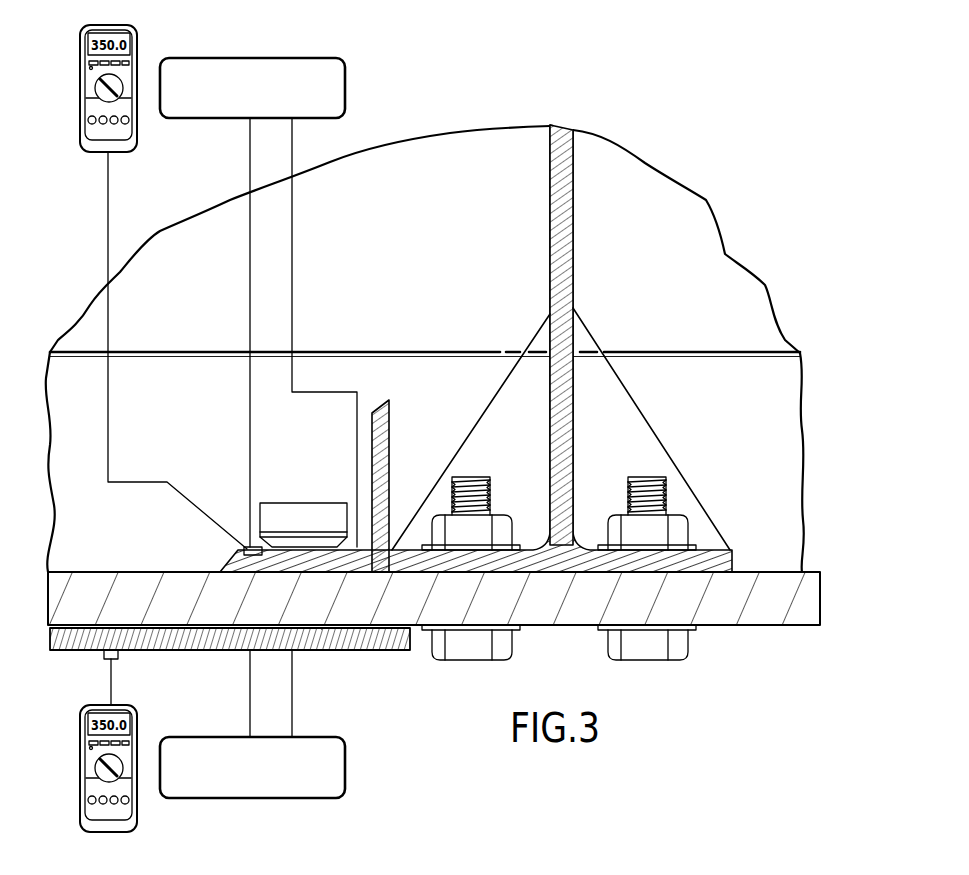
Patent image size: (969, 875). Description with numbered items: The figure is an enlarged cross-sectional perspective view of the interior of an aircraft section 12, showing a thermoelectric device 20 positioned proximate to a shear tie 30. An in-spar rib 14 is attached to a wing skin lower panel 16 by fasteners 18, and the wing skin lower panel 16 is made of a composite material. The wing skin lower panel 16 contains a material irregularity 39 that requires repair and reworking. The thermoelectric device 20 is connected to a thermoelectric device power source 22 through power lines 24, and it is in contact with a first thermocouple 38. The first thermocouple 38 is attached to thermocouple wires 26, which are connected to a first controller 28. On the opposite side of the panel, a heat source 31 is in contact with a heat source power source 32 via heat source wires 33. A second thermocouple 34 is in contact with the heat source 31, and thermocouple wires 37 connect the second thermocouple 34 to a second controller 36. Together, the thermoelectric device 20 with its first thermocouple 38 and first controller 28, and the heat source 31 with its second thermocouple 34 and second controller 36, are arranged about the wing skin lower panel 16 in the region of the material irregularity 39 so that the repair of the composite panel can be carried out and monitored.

The aircraft section 12 is at (468, 93).
The in-spar rib 14 is at (562, 178).
The wing skin lower panel 16 is at (72, 600).
The fasteners 18 is at (680, 530).
The thermoelectric device 20 is at (310, 503).
The thermoelectric device power source 22 is at (305, 58).
The power lines 24 is at (252, 252).
The thermocouple wires 26 is at (110, 237).
The first controller 28 is at (138, 46).
The shear tie 30 is at (394, 456).
The heat source 31 is at (56, 636).
The heat source power source 32 is at (305, 737).
The heat source wires 33 is at (290, 685).
The second thermocouple 34 is at (108, 659).
The second controller 36 is at (138, 726).
The thermocouple wires 37 is at (112, 690).
The first thermocouple 38 is at (244, 551).
The material irregularity 39 is at (232, 600).